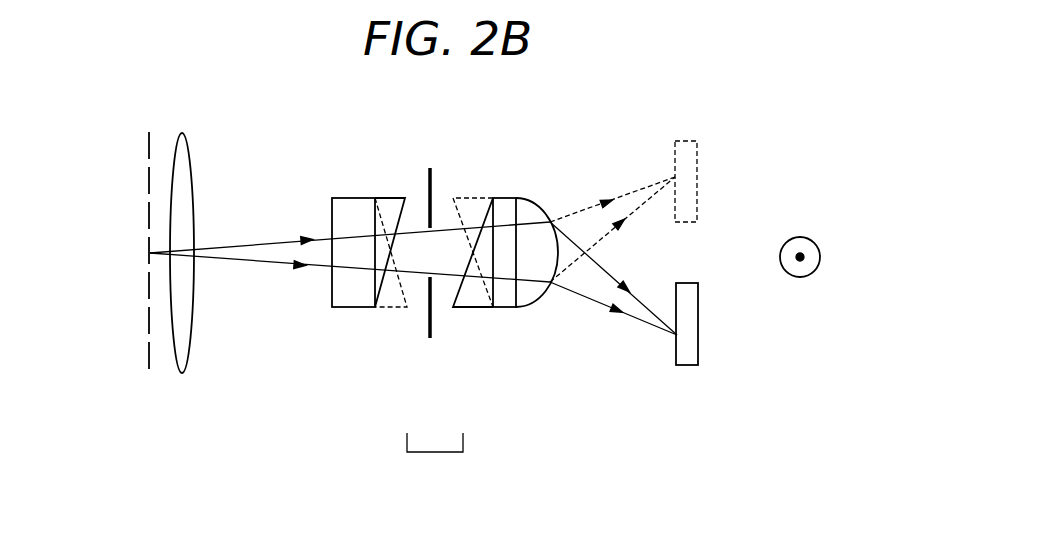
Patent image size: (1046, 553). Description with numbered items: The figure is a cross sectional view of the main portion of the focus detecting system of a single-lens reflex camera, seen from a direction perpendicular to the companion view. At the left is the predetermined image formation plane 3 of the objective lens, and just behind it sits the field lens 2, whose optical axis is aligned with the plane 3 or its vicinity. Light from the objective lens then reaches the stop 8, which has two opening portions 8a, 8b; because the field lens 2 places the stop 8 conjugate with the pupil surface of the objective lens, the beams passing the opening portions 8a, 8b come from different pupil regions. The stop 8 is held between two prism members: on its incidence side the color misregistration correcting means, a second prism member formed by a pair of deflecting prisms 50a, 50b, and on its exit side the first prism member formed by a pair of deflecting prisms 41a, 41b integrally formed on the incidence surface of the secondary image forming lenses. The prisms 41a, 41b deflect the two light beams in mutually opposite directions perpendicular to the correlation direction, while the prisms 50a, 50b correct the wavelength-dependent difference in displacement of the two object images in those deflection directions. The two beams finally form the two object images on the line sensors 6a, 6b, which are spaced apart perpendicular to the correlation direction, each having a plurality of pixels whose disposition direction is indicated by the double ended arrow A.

The field lens 2 is at (190, 165).
The predetermined image formation plane 3 is at (148, 180).
The deflecting prism 50a is at (402, 283).
The deflecting prism 50b is at (401, 213).
The stop 8 is at (435, 458).
The opening portion 8a is at (427, 187).
The opening portion 8b is at (428, 317).
The deflecting prism 41a is at (450, 208).
The deflecting prism 41b is at (445, 298).
The line sensor 6a is at (693, 163).
The line sensor 6b is at (693, 339).
The double ended arrow A is at (804, 257).